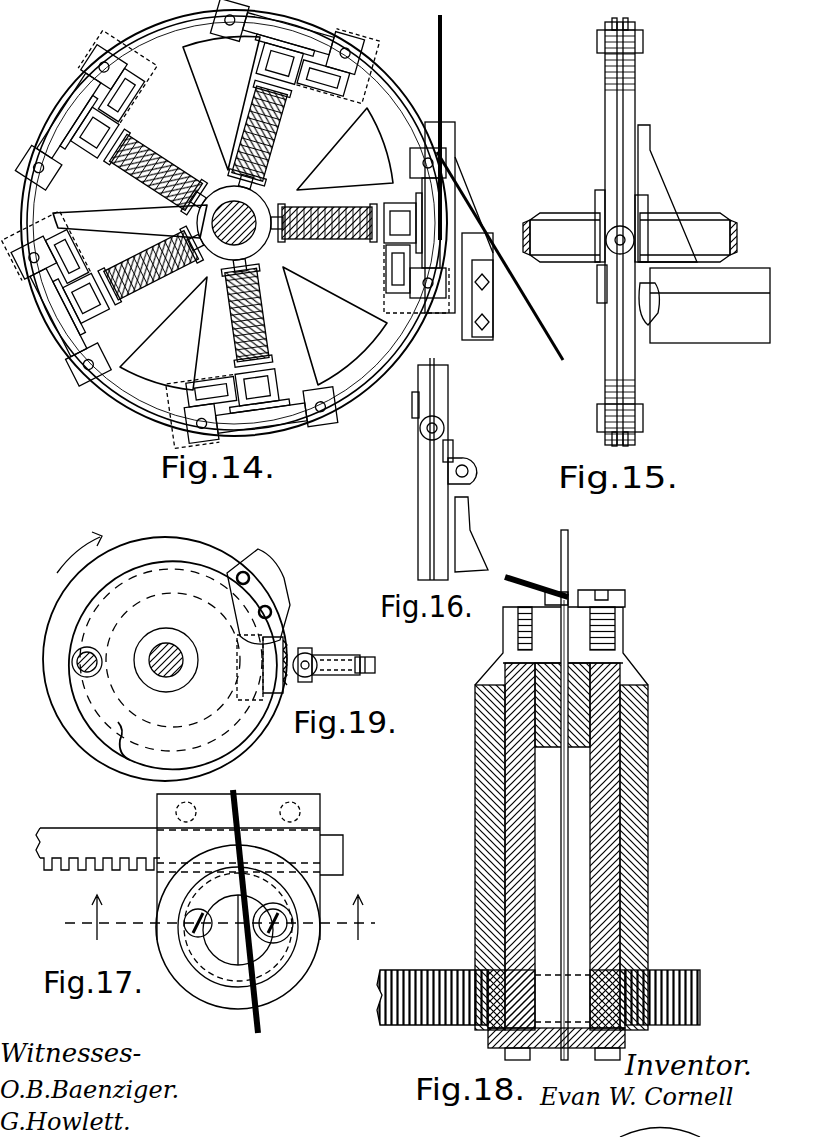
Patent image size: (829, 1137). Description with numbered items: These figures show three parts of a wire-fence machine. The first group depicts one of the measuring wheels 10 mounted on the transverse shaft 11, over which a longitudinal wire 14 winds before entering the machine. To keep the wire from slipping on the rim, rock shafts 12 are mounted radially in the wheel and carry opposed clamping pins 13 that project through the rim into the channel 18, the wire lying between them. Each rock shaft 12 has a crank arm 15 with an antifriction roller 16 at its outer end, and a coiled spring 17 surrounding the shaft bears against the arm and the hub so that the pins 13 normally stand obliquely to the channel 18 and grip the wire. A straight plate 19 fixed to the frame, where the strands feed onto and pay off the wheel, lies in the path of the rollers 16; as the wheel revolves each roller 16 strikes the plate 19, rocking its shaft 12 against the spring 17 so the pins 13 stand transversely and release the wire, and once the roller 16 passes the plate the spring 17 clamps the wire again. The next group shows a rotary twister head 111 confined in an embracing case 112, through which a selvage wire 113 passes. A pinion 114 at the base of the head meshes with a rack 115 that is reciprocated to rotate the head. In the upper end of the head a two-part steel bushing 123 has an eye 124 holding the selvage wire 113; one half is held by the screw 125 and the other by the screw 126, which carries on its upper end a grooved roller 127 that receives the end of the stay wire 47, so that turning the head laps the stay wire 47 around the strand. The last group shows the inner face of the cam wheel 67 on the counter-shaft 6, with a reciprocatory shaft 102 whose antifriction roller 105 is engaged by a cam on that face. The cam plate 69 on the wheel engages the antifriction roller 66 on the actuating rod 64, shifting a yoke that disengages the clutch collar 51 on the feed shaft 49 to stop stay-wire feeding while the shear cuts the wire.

In FIG. 19, the counter-shaft 6 is at (170, 650).
In FIG. 14, the measuring wheel 10 is at (230, 42).
In FIG. 15, the measuring wheel 10 is at (636, 86).
In FIG. 16, the measuring wheel 10 is at (420, 525).
In FIG. 14, the transverse shaft 11 is at (198, 220).
In FIG. 15, the transverse shaft 11 is at (575, 243).
In FIG. 14, the rock shaft 12 is at (372, 210).
In FIG. 15, the rock shaft 12 is at (632, 240).
In FIG. 16, the rock shaft 12 is at (440, 428).
In FIG. 14, the clamping pin 13 is at (452, 212).
In FIG. 15, the clamping pin 13 is at (608, 30).
In FIG. 16, the clamping pin 13 is at (440, 422).
In FIG. 14, the wire 14 is at (438, 45).
In FIG. 16, the wire 14 is at (442, 459).
In FIG. 14, the crank arm 15 is at (400, 200).
In FIG. 15, the crank arm 15 is at (598, 293).
In FIG. 16, the crank arm 15 is at (452, 450).
In FIG. 14, the antifriction roller 16 is at (60, 256).
In FIG. 15, the antifriction roller 16 is at (660, 301).
In FIG. 16, the antifriction roller 16 is at (480, 472).
In FIG. 14, the coiled spring 17 is at (143, 180).
In FIG. 15, the channel 18 is at (632, 370).
In FIG. 17, the channel 18 is at (219, 917).
In FIG. 14, the straight plate 19 is at (458, 147).
In FIG. 15, the straight plate 19 is at (645, 203).
In FIG. 16, the straight plate 19 is at (478, 547).
In FIG. 17, the stay wire 47 is at (262, 1018).
In FIG. 18, the stay wire 47 is at (530, 587).
In FIG. 19, the shaft 49 is at (376, 667).
In FIG. 19, the clutch collar 51 is at (278, 642).
In FIG. 19, the actuating rod 64 is at (342, 677).
In FIG. 19, the antifriction roller 66 is at (312, 655).
In FIG. 19, the cam wheel 67 is at (198, 540).
In FIG. 19, the cam plate 69 is at (272, 580).
In FIG. 19, the reciprocatory shaft 102 is at (95, 652).
In FIG. 19, the antifriction roller 105 is at (94, 673).
In FIG. 18, the rotary twister head 111 is at (620, 855).
In FIG. 18, the embracing case 112 is at (640, 902).
In FIG. 18, the selvage wire 113 is at (570, 542).
In FIG. 17, the pinion 114 is at (238, 867).
In FIG. 18, the pinion 114 is at (640, 957).
In FIG. 17, the rack 115 is at (48, 832).
In FIG. 18, the rack 115 is at (432, 970).
In FIG. 17, the two-part steel bushing 123 is at (236, 970).
In FIG. 18, the two-part steel bushing 123 is at (612, 662).
In FIG. 17, the eye 124 is at (215, 947).
In FIG. 18, the eye 124 is at (560, 665).
In FIG. 17, the screw 125 is at (185, 932).
In FIG. 18, the screw 125 is at (518, 634).
In FIG. 17, the screw 126 is at (290, 937).
In FIG. 18, the screw 126 is at (620, 634).
In FIG. 17, the grooved roller 127 is at (300, 917).
In FIG. 18, the grooved roller 127 is at (630, 602).